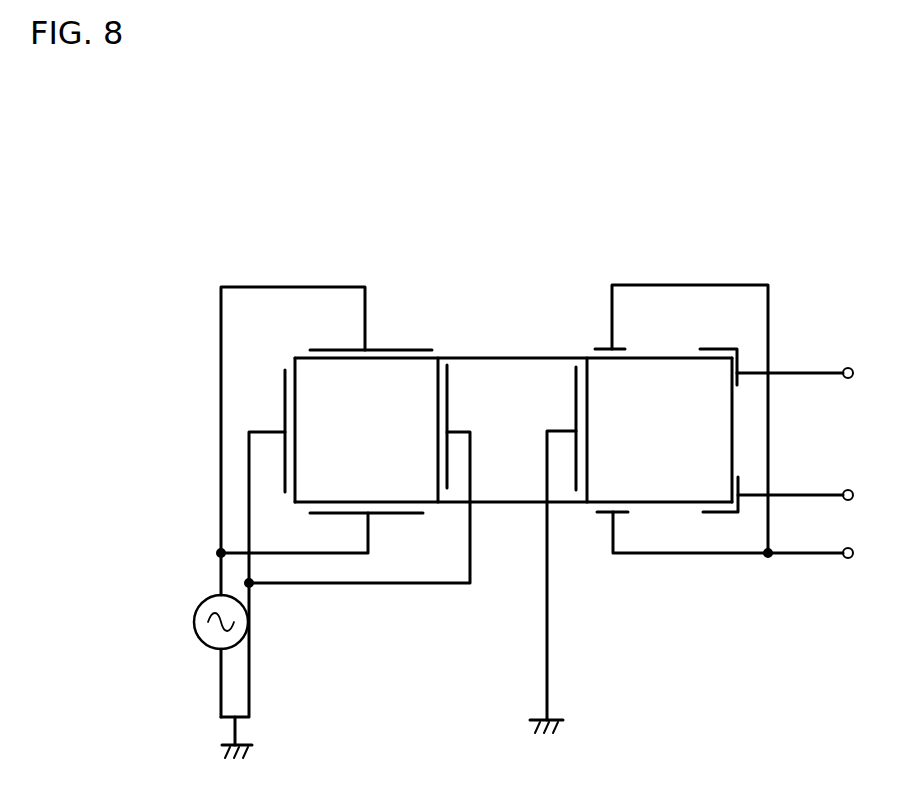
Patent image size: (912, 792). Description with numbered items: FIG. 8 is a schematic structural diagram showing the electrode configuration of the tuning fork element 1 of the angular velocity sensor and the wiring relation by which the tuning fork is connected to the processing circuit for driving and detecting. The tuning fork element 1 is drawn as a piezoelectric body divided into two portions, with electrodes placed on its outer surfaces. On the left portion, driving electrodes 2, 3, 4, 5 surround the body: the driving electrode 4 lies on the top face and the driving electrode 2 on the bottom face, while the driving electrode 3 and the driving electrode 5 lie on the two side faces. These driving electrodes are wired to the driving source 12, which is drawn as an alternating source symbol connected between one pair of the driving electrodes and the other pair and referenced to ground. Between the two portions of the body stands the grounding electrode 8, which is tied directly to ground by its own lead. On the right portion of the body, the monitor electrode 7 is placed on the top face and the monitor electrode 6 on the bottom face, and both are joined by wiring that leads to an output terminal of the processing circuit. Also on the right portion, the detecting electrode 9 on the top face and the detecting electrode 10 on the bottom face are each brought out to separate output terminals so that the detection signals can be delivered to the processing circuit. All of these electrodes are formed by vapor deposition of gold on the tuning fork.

The tuning fork element 1 is at (517, 375).
The driving electrode 2 is at (403, 513).
The driving electrode 3 is at (283, 458).
The driving electrode 4 is at (380, 350).
The driving electrode 5 is at (447, 383).
The monitor electrode 6 is at (615, 512).
The monitor electrode 7 is at (623, 345).
The grounding electrode 8 is at (575, 458).
The detecting electrode 9 is at (712, 345).
The detecting electrode 10 is at (715, 512).
The driving source 12 is at (194, 622).